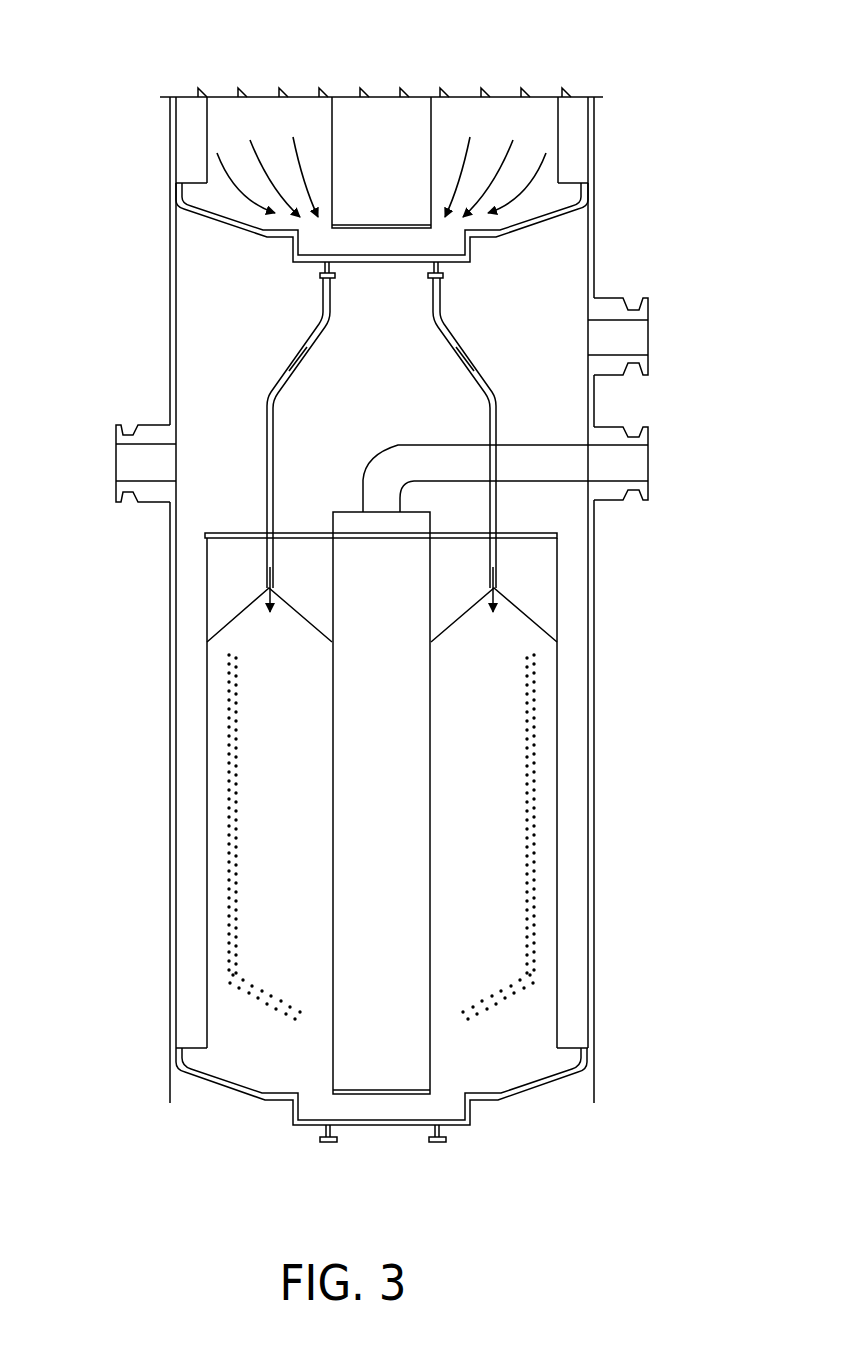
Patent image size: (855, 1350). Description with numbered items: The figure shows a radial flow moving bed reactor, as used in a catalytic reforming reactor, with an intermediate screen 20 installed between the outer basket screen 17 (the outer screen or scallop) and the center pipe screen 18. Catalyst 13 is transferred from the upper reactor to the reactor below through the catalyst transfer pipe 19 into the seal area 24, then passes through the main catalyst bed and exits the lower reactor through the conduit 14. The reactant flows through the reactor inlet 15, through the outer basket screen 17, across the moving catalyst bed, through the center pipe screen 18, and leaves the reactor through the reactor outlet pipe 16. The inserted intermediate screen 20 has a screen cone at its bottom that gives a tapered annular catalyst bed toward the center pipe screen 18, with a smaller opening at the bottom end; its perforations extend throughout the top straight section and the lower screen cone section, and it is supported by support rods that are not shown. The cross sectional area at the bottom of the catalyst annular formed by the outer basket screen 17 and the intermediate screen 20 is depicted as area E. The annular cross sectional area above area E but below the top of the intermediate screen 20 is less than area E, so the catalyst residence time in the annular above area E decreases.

The catalyst 13 is at (275, 113).
The conduit 14 is at (450, 1088).
The reactor inlet 15 is at (649, 335).
The reactor outlet pipe 16 is at (648, 457).
The outer basket screen 17 is at (558, 695).
The center pipe screen 18 is at (333, 720).
The catalyst transfer pipe 19 is at (268, 388).
The intermediate screen 20 is at (228, 808).
The seal area 24 is at (240, 637).
The area E is at (265, 1022).